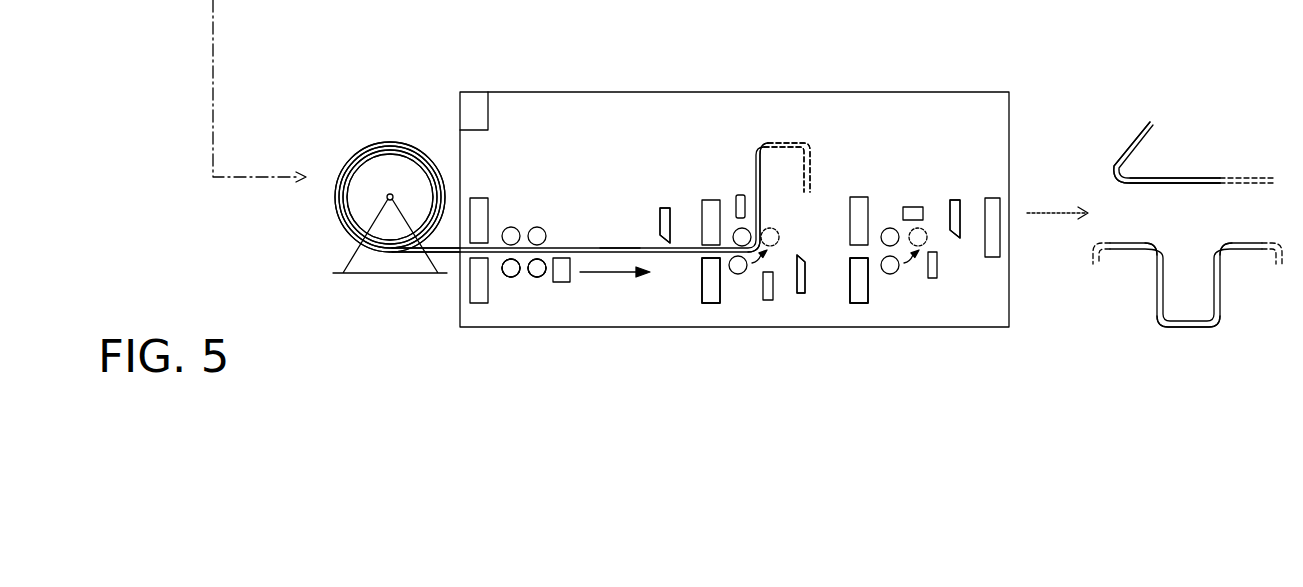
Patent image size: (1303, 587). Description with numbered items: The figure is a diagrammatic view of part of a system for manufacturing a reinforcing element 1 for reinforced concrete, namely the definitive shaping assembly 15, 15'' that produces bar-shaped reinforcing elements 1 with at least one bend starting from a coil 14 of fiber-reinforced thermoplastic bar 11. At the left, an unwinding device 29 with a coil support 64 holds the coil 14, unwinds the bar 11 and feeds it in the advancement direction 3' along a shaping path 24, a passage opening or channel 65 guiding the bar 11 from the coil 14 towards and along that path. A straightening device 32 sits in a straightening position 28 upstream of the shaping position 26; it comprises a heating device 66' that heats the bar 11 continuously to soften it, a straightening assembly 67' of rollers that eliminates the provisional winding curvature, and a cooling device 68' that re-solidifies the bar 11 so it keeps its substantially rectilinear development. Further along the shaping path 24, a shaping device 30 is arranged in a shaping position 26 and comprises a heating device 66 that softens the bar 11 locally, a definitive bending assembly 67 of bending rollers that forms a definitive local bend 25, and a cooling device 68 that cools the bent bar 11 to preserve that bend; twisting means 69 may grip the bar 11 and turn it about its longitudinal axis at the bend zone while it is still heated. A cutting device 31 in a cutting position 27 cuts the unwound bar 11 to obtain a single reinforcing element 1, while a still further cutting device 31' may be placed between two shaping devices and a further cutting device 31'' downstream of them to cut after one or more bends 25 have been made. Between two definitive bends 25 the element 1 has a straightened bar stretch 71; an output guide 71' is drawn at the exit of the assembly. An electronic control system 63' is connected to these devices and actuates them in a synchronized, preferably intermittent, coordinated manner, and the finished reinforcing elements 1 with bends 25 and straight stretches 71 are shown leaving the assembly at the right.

The reinforcing element 1 is at (818, 132).
The advancement direction 3' is at (618, 321).
The fiber-reinforced thermoplastic bar 11 is at (566, 247).
The coil 14 is at (347, 222).
The definitive shaping assembly 15 is at (771, 98).
The definitive shaping assembly 15'' is at (771, 98).
The shaping path 24 is at (613, 247).
The definitive local bend 25 is at (758, 143).
The shaping position 26 is at (729, 300).
The cutting position 27 is at (663, 208).
The straightening position 28 is at (530, 297).
The unwinding device 29 is at (368, 213).
The shaping device 30 is at (729, 300).
The cutting device 31 is at (622, 150).
The still further cutting device 31' is at (989, 146).
The further cutting device 31'' is at (838, 335).
The straightening device 32 is at (530, 297).
The electronic control system 63' is at (477, 83).
The coil support 64 is at (368, 213).
The passage opening or channel 65 is at (457, 257).
The heating device 66 is at (769, 254).
The heating device 66' is at (445, 190).
The definitive bending assembly 67 is at (841, 321).
The straightening assembly 67' is at (530, 156).
The cooling device 68 is at (878, 316).
The cooling device 68' is at (579, 324).
The twisting means 69 is at (741, 196).
The straightened bar stretch 71 is at (1214, 249).
The output guide 71' is at (1021, 188).